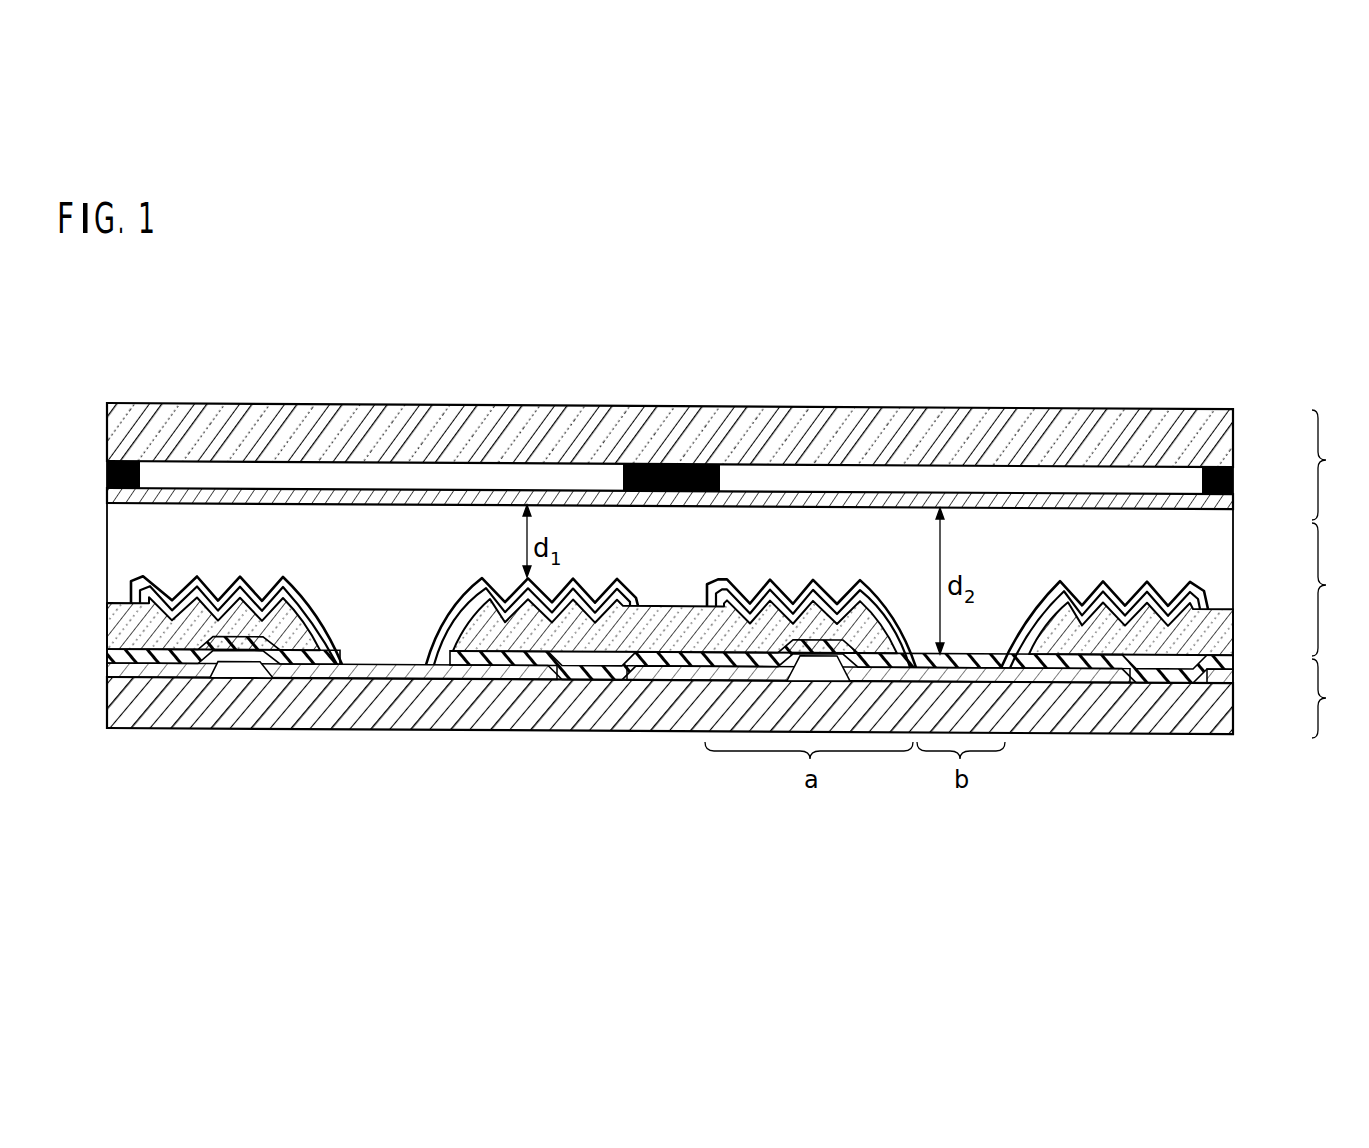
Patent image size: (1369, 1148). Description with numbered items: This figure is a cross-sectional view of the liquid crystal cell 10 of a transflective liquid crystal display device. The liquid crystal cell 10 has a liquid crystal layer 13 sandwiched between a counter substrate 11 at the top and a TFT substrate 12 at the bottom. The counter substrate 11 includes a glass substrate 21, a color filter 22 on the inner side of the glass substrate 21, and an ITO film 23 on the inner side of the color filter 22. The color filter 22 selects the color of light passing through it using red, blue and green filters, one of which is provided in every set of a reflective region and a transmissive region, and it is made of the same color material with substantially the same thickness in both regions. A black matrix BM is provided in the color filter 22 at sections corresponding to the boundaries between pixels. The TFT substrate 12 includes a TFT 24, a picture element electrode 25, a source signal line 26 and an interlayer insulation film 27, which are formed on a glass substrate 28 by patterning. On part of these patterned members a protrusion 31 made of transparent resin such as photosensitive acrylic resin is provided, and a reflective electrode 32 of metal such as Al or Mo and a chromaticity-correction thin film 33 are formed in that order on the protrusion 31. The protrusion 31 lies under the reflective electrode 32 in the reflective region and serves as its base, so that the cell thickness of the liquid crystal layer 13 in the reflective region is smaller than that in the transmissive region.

The liquid crystal cell 10 is at (778, 312).
The counter substrate 11 is at (1335, 465).
The TFT substrate 12 is at (1335, 698).
The liquid crystal layer 13 is at (1335, 589).
The glass substrate 21 is at (1236, 447).
The color filter 22 is at (1236, 483).
The ITO film 23 is at (1236, 506).
The TFT 24 is at (244, 672).
The picture element electrode 25 is at (400, 672).
The source signal line 26 is at (668, 674).
The interlayer insulation film 27 is at (590, 676).
The glass substrate 28 is at (1236, 712).
The protrusion 31 is at (1236, 633).
The reflective electrode 32 is at (1212, 594).
The chromaticity-correction thin film 33 is at (1212, 584).
The black matrix BM is at (678, 482).